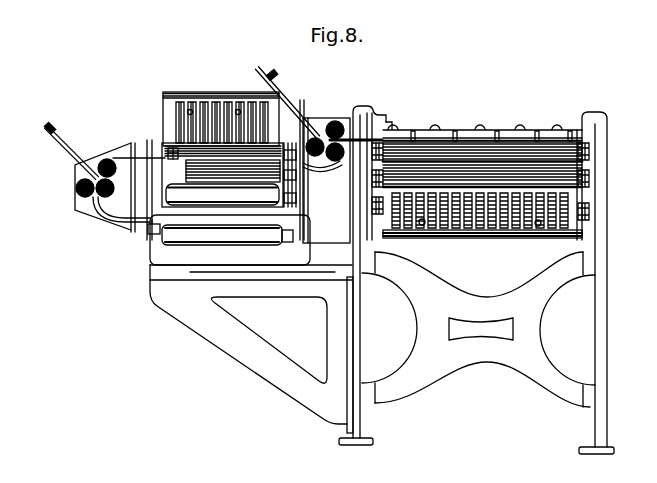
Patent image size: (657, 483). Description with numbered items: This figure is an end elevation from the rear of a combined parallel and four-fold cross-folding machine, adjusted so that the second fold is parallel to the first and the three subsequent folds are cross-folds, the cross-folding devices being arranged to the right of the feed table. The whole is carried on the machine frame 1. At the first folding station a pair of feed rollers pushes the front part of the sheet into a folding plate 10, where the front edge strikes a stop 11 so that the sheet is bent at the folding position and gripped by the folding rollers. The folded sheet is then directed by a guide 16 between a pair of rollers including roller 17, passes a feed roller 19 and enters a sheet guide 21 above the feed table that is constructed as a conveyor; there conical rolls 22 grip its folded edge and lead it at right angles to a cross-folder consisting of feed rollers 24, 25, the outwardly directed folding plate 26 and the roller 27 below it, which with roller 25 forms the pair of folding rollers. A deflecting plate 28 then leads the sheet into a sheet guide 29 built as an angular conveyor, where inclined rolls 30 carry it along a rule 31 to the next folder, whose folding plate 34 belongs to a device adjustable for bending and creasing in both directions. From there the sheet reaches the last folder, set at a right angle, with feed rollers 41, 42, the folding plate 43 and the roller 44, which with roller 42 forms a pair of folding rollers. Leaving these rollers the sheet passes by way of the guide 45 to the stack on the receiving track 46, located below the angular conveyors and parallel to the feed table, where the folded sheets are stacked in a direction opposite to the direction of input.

The machine frame 1 is at (361, 343).
The folding plate 10 is at (512, 232).
The stop 11 is at (440, 230).
The guide 16 is at (590, 170).
The roller 17 is at (591, 146).
The feed roller 19 is at (491, 129).
The sheet guide 21 is at (529, 129).
The conical rolls 22 is at (400, 129).
The feed roller 24 is at (337, 122).
The feed roller 25 is at (334, 162).
The folding plate 26 is at (297, 125).
The roller 27 is at (315, 172).
The deflecting plate 28 is at (301, 165).
The sheet guide 29 is at (148, 190).
The inclined rolls 30 is at (170, 142).
The rule 31 is at (124, 220).
The folding plate 34 is at (183, 98).
The feed roller 41 is at (107, 159).
The feed roller 42 is at (99, 198).
The folding plate 43 is at (66, 140).
The roller 44 is at (78, 190).
The guide 45 is at (212, 170).
The receiving track 46 is at (213, 239).